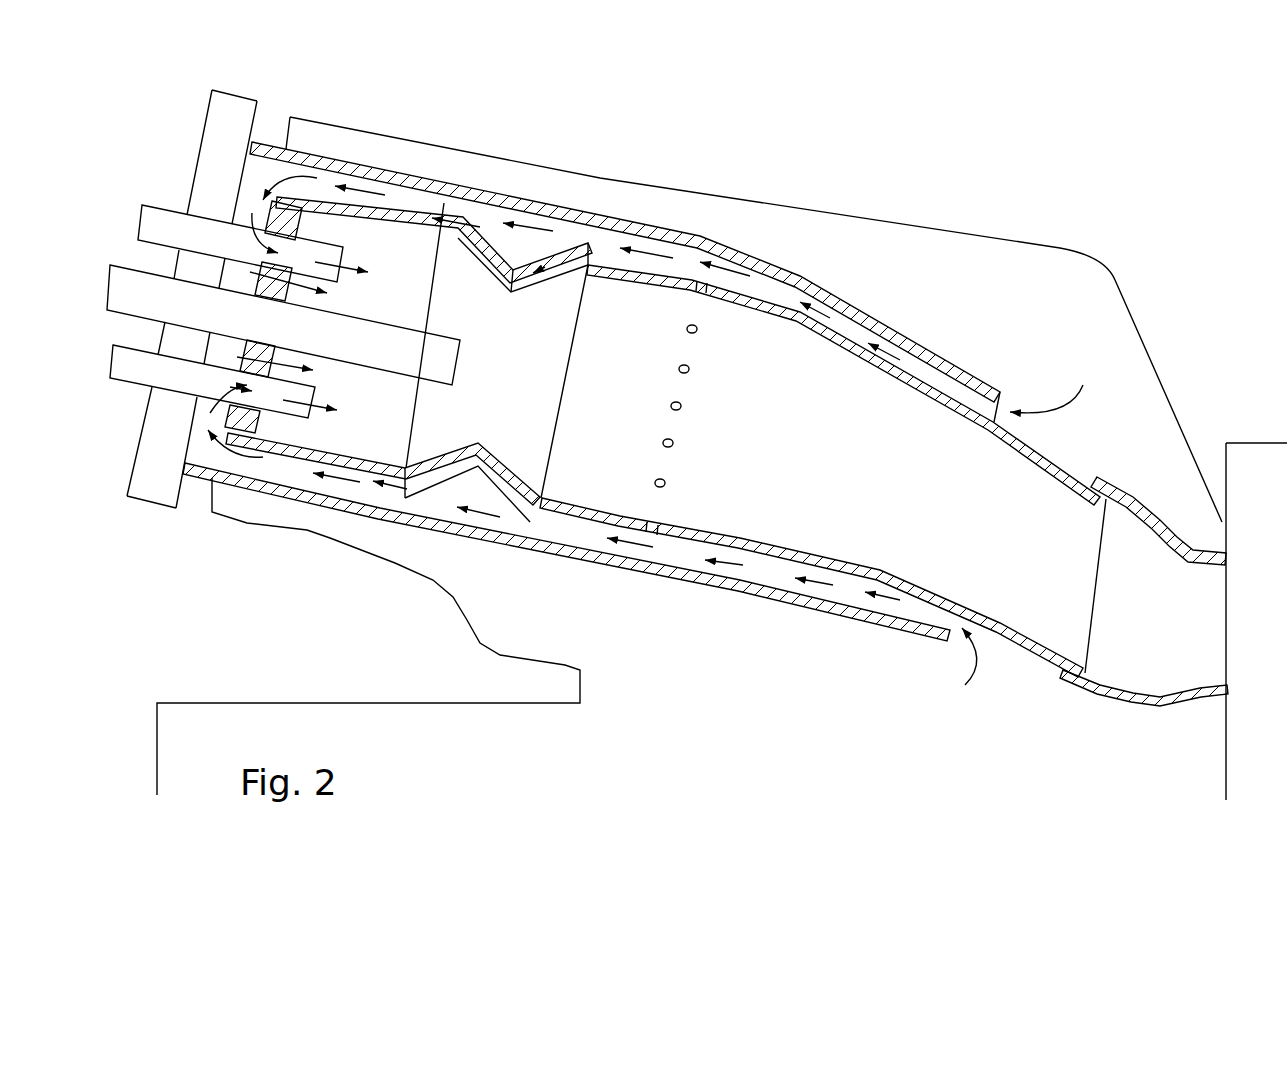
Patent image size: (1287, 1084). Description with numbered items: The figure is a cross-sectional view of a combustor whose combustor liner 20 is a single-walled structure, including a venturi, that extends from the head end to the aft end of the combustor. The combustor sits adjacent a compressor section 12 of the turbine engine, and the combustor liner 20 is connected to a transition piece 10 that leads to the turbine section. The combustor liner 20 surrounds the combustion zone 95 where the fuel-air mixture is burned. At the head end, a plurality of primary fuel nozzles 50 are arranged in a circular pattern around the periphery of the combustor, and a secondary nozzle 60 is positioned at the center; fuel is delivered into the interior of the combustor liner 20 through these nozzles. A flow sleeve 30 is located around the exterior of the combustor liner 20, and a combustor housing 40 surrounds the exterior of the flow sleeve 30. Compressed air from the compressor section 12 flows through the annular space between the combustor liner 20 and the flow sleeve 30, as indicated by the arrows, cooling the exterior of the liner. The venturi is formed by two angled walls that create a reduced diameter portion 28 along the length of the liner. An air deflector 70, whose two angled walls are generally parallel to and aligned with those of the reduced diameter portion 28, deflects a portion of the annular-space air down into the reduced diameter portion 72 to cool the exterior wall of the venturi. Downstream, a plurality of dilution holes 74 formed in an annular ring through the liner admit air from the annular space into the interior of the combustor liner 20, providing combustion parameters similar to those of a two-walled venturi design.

The transition piece 10 is at (1163, 697).
The compressor section 12 is at (508, 741).
The combustor liner 20 is at (867, 353).
The reduced diameter portion 28 is at (473, 260).
The flow sleeve 30 is at (767, 270).
The combustor housing 40 is at (860, 212).
The primary fuel nozzles 50 is at (163, 205).
The secondary nozzle 60 is at (220, 323).
The air deflector 70 is at (478, 257).
The reduced diameter portion 72 is at (528, 270).
The dilution holes 74 is at (697, 281).
The combustion zone 95 is at (536, 396).